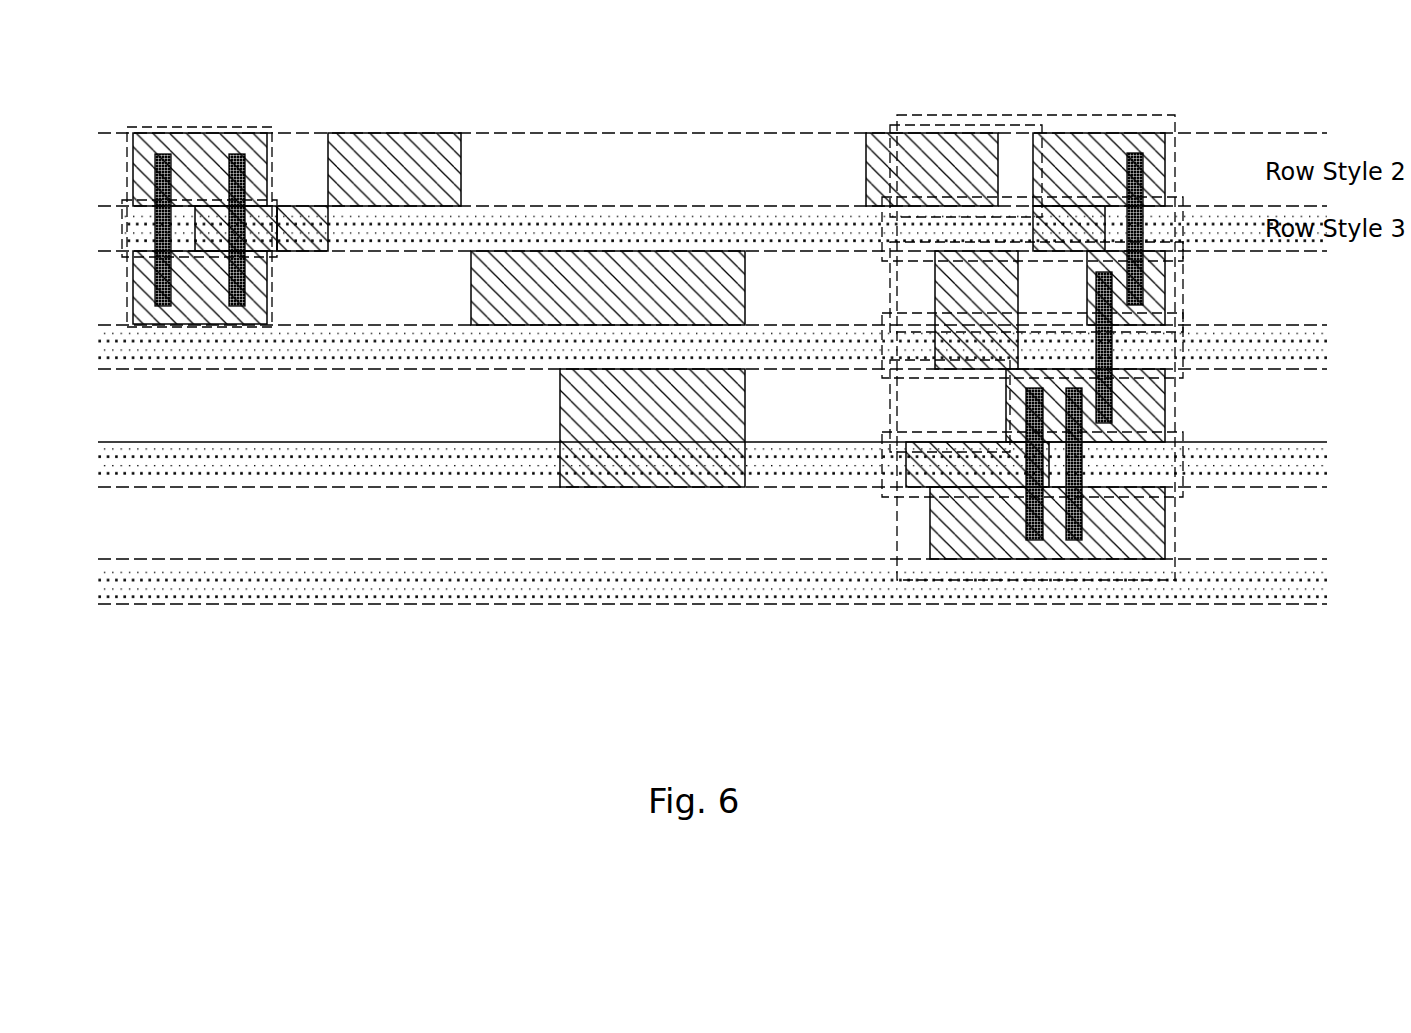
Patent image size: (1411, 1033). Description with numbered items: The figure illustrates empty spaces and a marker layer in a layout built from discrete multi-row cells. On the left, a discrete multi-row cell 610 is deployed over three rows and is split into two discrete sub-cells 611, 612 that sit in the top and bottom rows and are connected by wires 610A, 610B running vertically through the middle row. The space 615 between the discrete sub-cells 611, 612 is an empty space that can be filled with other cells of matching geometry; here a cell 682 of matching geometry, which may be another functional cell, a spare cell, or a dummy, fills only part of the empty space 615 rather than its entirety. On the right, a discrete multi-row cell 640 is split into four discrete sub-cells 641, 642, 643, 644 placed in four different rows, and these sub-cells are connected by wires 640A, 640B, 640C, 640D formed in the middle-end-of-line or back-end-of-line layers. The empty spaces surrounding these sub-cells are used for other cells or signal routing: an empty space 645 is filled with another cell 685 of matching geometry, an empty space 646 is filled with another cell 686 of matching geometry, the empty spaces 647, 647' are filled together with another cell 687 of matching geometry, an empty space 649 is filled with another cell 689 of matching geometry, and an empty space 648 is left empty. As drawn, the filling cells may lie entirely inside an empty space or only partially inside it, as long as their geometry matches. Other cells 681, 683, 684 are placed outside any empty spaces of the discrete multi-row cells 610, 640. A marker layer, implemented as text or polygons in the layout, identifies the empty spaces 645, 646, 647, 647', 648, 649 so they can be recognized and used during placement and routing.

The discrete multi-row cell 610 is at (128, 167).
The wire 610A is at (162, 156).
The wire 610B is at (236, 156).
The discrete sub-cell 611 is at (196, 147).
The discrete sub-cell 612 is at (255, 298).
The empty space 615 is at (123, 232).
The other cell 681 is at (461, 168).
The other cell of matching geometry 682 is at (310, 225).
The other cell 683 is at (473, 296).
The other cell 684 is at (565, 419).
The discrete multi-row cell 640 is at (1005, 115).
The wire 640A is at (1142, 178).
The wire 640B is at (1113, 350).
The wire 640C is at (1033, 541).
The wire 640D is at (1075, 541).
The discrete sub-cell 641 is at (1165, 155).
The discrete sub-cell 642 is at (1155, 285).
The discrete sub-cell 643 is at (1157, 408).
The discrete sub-cell 644 is at (1157, 523).
The empty space 645 is at (890, 175).
The empty space 646 is at (882, 230).
The empty space 647 is at (1000, 287).
The empty space 647' is at (990, 359).
The empty space 648 is at (890, 415).
The empty space 649 is at (882, 463).
The other cell of matching geometry 685 is at (867, 148).
The other cell of matching geometry 686 is at (1068, 217).
The other cell of matching geometry 687 is at (942, 298).
The other cell of matching geometry 689 is at (920, 476).